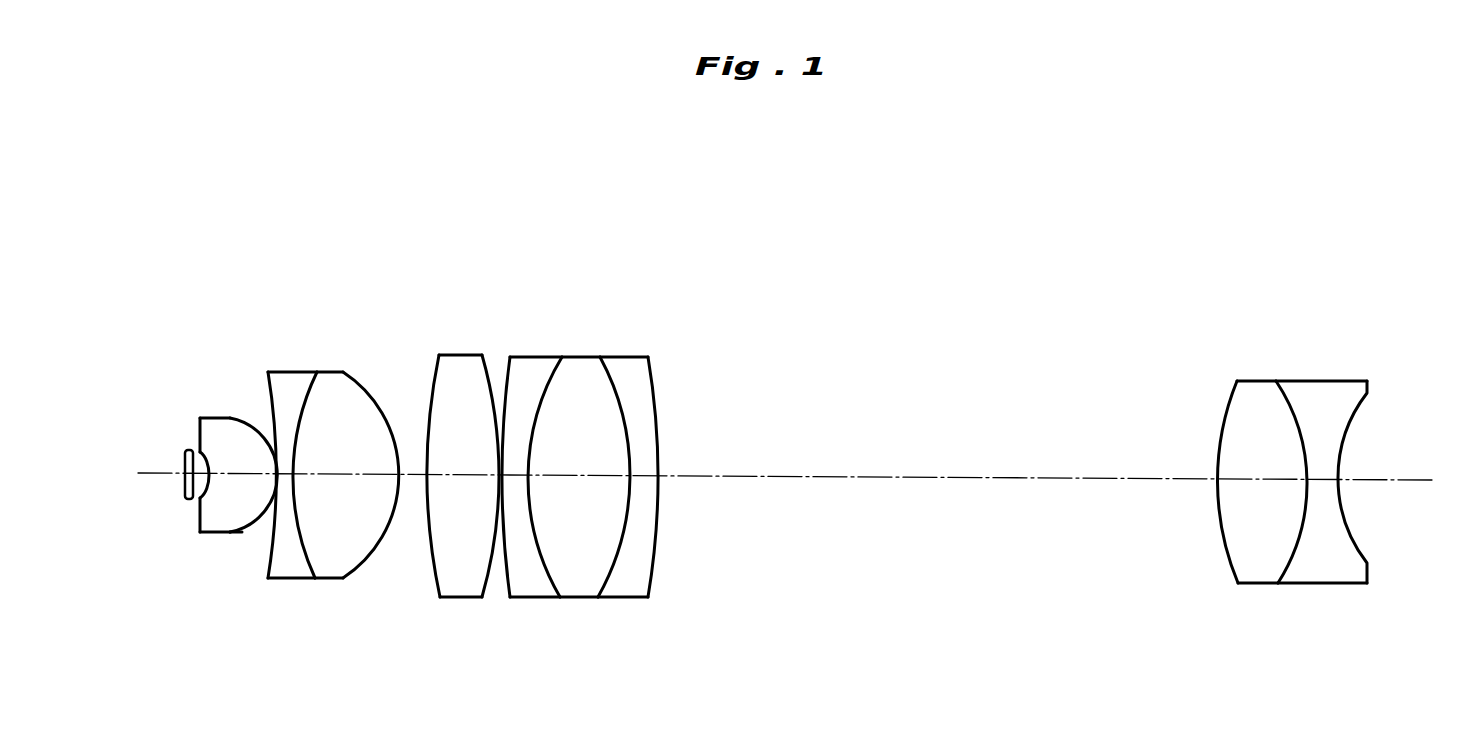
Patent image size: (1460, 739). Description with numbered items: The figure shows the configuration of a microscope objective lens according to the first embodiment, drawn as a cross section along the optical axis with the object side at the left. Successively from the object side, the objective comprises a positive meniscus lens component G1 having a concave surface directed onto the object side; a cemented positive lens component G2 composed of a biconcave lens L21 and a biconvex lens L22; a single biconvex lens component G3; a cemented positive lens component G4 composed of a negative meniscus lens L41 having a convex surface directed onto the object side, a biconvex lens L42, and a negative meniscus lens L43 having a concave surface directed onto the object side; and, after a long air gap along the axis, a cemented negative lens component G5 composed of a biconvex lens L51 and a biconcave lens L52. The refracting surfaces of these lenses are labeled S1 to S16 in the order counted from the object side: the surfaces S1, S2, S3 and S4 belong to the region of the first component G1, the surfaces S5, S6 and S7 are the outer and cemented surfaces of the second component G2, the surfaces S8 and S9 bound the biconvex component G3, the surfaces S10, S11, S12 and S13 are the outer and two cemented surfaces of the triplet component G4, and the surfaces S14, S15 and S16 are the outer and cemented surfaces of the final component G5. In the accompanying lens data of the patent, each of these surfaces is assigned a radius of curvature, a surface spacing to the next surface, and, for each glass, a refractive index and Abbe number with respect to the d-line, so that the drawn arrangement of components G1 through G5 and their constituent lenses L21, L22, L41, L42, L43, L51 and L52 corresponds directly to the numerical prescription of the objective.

The lens surface S1 is at (185, 481).
The lens surface S2 is at (198, 485).
The lens surface S3 is at (199, 505).
The lens surface S4 is at (237, 533).
The lens surface S5 is at (266, 558).
The lens surface S6 is at (303, 534).
The lens surface S7 is at (362, 566).
The lens surface S8 is at (428, 525).
The lens surface S9 is at (490, 585).
The lens surface S10 is at (507, 580).
The lens surface S11 is at (545, 580).
The lens surface S12 is at (612, 578).
The lens surface S13 is at (660, 565).
The lens surface S14 is at (1220, 523).
The lens surface S15 is at (1297, 547).
The lens surface S16 is at (1348, 523).
The positive meniscus lens component G1 is at (205, 538).
The cemented positive lens component G2 is at (327, 487).
The biconvex lens component G3 is at (443, 529).
The cemented positive lens component G4 is at (612, 488).
The cemented negative lens component G5 is at (1299, 486).
The biconcave lens L21 is at (302, 469).
The biconvex lens L22 is at (363, 461).
The negative meniscus lens L41 is at (532, 486).
The biconvex lens L42 is at (602, 463).
The negative meniscus lens L43 is at (668, 456).
The biconvex lens L51 is at (1275, 471).
The biconcave lens L52 is at (1361, 438).